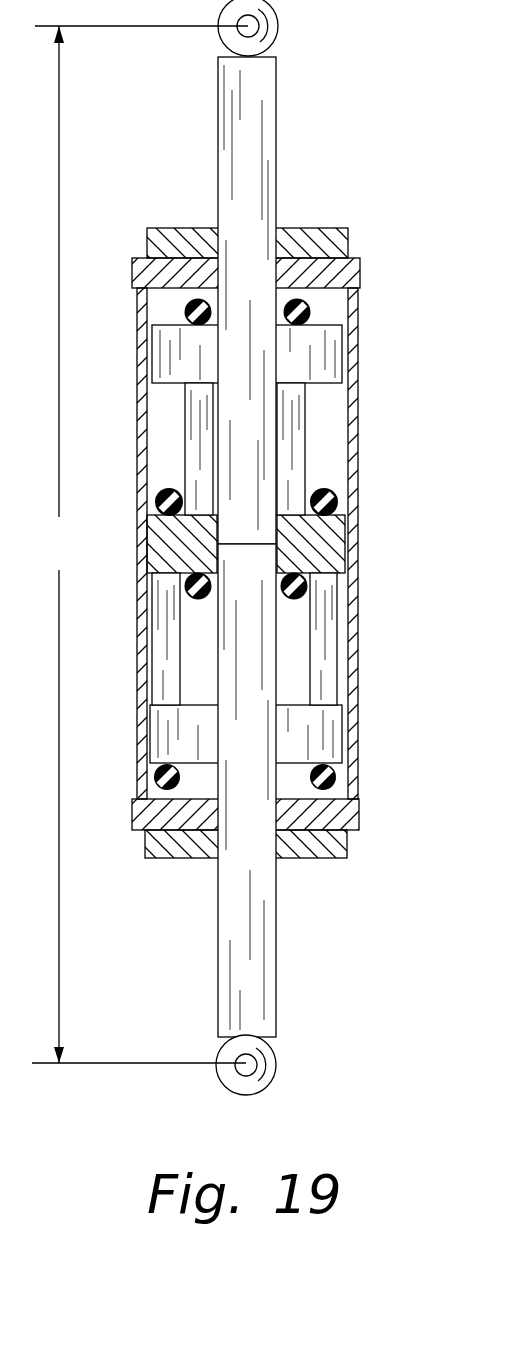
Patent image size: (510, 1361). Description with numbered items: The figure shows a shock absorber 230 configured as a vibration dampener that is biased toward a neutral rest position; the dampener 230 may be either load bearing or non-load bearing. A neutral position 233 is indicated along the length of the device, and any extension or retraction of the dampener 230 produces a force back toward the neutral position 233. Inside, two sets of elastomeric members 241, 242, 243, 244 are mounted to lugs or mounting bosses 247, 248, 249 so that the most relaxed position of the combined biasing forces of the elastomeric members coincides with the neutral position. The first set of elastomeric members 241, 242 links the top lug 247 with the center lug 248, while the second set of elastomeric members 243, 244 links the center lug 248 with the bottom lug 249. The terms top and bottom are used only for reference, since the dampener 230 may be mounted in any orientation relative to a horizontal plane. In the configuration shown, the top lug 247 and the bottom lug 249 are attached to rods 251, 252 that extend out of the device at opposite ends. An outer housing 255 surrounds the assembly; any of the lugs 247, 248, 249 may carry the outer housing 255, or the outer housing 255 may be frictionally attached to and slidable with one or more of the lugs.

The shock absorber 230 is at (283, 547).
The neutral position 233 is at (140, 544).
The elastomeric member 241 is at (188, 467).
The elastomeric member 242 is at (305, 447).
The elastomeric member 243 is at (164, 664).
The elastomeric member 244 is at (328, 640).
The top lug 247 is at (157, 357).
The center lug 248 is at (347, 535).
The bottom lug 249 is at (333, 730).
The rod 251 is at (265, 192).
The rod 252 is at (266, 912).
The outer housing 255 is at (352, 613).